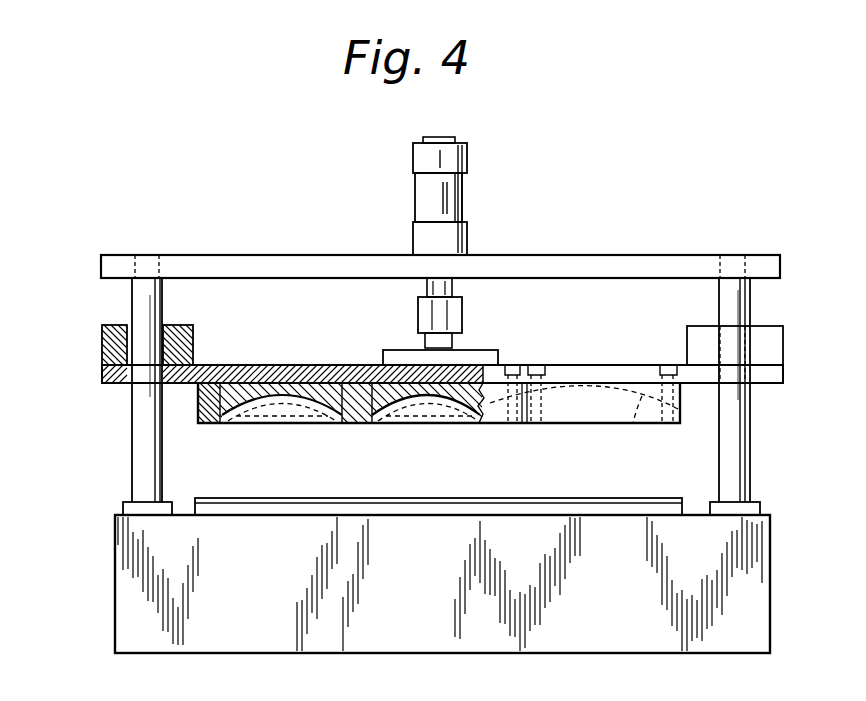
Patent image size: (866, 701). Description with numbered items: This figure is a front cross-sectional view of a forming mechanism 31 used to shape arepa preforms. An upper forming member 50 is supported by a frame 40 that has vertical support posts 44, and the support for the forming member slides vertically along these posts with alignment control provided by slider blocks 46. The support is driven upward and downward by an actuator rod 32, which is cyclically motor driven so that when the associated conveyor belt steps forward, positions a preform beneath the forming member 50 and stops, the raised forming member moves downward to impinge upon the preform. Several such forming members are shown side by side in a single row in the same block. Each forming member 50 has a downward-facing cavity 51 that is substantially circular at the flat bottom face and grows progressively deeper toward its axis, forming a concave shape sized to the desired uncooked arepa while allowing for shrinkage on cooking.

The forming mechanism 31 is at (355, 236).
The actuator rod 32 is at (462, 205).
The frame 40 is at (664, 262).
The vertical support posts 44 is at (146, 295).
The slider blocks 46 is at (102, 350).
The upper forming member 50 is at (372, 422).
The cavity 51 is at (285, 412).